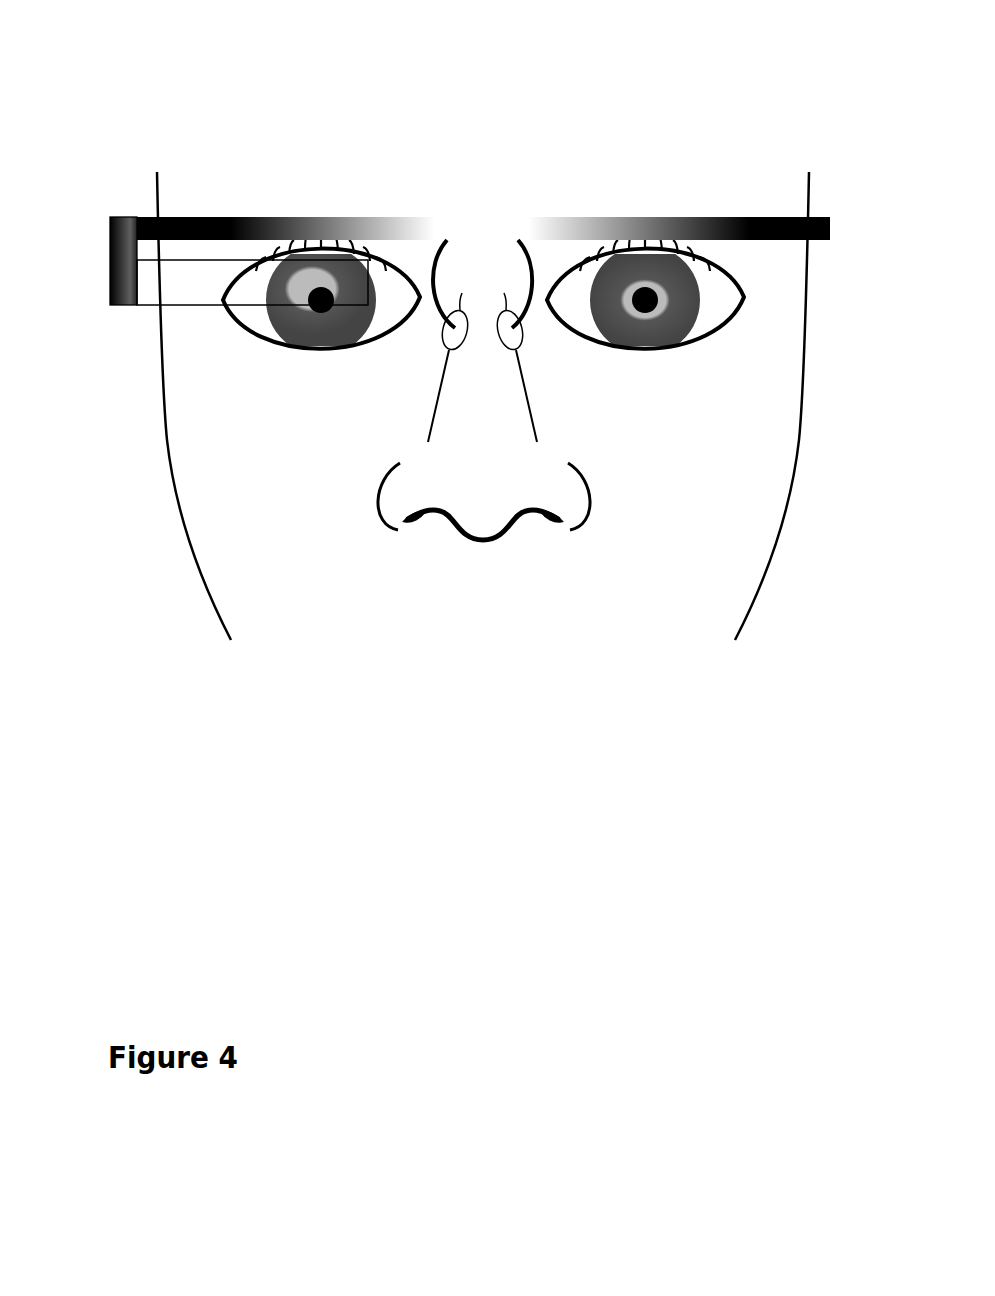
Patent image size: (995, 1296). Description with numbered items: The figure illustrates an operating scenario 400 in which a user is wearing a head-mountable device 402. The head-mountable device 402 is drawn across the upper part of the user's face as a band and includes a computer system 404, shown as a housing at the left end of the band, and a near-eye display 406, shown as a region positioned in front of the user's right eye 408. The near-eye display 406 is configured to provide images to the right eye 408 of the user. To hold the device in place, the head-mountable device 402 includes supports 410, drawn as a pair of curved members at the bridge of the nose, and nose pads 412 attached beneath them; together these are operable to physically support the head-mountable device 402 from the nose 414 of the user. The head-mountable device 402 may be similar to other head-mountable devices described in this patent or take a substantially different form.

The operating scenario 400 is at (397, 66).
The head-mountable device 402 is at (205, 217).
The computer system 404 is at (110, 243).
The near-eye display 406 is at (202, 305).
The right eye 408 is at (307, 347).
The supports 410 is at (440, 262).
The nose pads 412 is at (446, 352).
The nose 414 is at (535, 428).